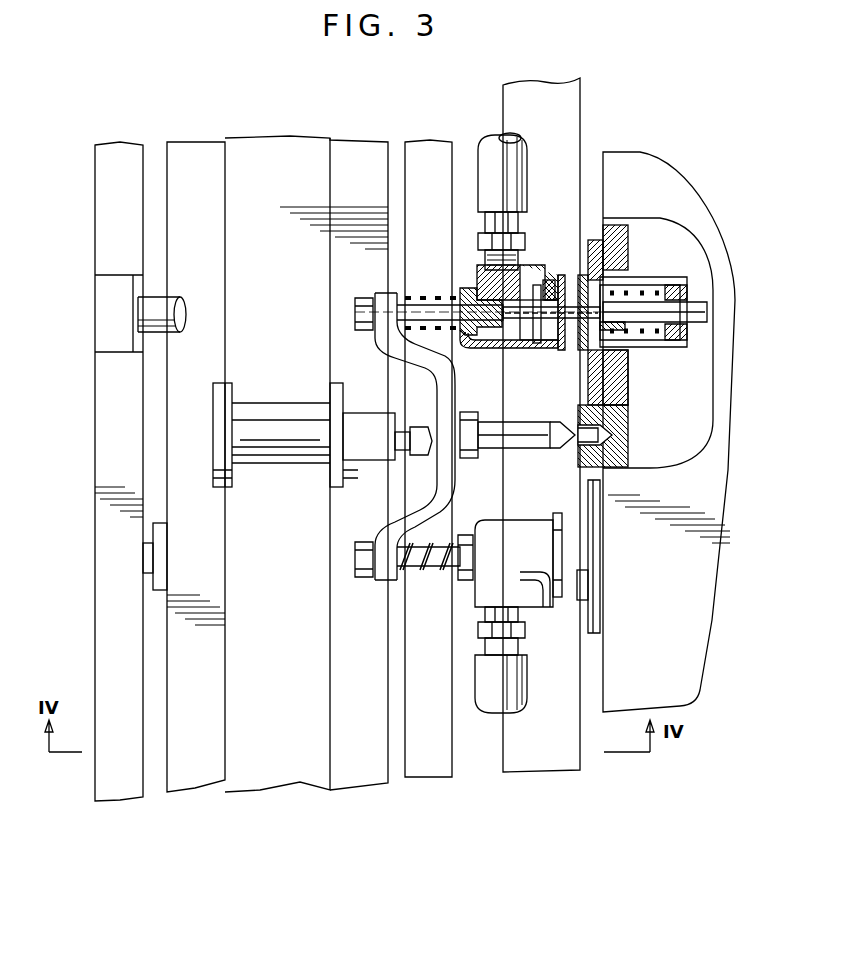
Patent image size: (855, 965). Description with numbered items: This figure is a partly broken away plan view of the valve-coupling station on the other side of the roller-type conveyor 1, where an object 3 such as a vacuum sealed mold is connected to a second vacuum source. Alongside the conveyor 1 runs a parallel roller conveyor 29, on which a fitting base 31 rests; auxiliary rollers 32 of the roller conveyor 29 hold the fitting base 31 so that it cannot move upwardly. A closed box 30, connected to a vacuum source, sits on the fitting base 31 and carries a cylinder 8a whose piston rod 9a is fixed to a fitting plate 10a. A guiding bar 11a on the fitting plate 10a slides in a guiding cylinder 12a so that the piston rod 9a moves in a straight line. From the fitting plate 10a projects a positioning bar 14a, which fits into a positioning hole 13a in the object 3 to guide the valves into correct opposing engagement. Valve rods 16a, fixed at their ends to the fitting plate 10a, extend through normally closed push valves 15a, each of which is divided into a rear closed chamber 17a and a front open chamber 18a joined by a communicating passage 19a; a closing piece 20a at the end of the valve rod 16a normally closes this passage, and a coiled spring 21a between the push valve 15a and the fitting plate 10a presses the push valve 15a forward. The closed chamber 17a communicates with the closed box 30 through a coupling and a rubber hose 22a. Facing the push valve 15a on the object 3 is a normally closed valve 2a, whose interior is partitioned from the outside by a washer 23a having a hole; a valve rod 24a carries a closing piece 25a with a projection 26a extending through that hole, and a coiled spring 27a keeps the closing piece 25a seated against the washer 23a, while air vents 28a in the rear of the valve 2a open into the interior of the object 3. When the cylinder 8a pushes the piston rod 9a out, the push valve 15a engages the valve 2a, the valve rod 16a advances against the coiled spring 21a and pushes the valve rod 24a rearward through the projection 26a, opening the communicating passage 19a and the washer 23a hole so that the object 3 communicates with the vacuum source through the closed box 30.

The roller-type conveyor 1 is at (540, 765).
The normally closed valve 2a is at (610, 260).
The object 3 is at (697, 682).
The cylinder 8a is at (262, 455).
The piston rod 9a is at (403, 430).
The fitting plate 10a is at (440, 472).
The guiding bar 11a is at (418, 425).
The guiding cylinder 12a is at (350, 470).
The positioning hole 13a is at (578, 448).
The positioning bar 14a is at (498, 448).
The normally closed push valve 15a is at (528, 290).
The valve rod 16a is at (423, 300).
The closed chamber 17a is at (495, 340).
The open chamber 18a is at (548, 338).
The communicating passage 19a is at (528, 345).
The closing piece 20a is at (535, 295).
The coiled spring 21a is at (447, 300).
The rubber hose 22a is at (510, 133).
The washer 23a is at (585, 350).
The valve rod 24a is at (707, 312).
The closing piece 25a is at (615, 330).
The projection 26a is at (625, 365).
The coiled spring 27a is at (672, 288).
The air vent 28a is at (638, 278).
The roller conveyor 29 is at (118, 785).
The closed box 30 is at (278, 768).
The fitting base 31 is at (197, 775).
The auxiliary roller 32 is at (140, 312).